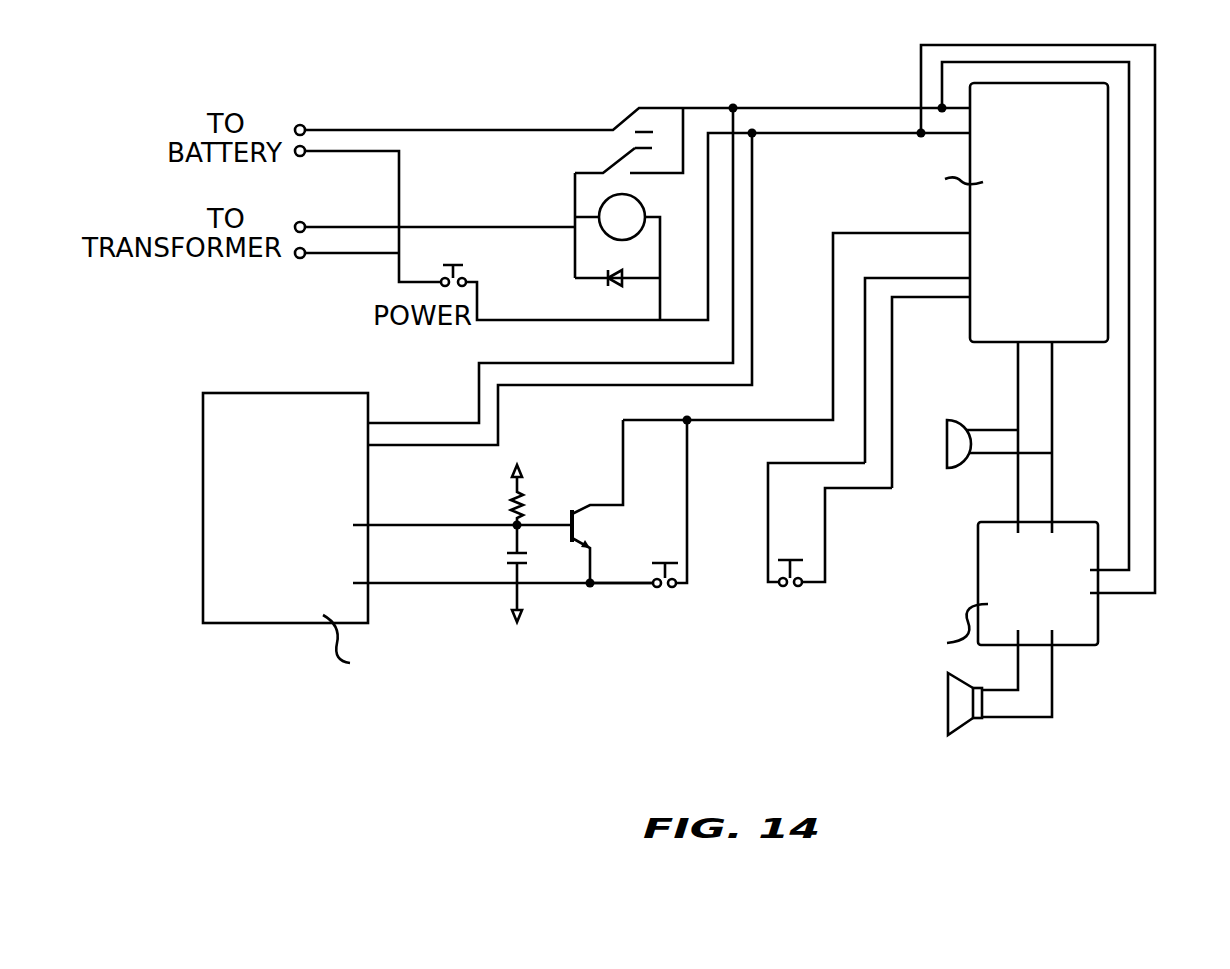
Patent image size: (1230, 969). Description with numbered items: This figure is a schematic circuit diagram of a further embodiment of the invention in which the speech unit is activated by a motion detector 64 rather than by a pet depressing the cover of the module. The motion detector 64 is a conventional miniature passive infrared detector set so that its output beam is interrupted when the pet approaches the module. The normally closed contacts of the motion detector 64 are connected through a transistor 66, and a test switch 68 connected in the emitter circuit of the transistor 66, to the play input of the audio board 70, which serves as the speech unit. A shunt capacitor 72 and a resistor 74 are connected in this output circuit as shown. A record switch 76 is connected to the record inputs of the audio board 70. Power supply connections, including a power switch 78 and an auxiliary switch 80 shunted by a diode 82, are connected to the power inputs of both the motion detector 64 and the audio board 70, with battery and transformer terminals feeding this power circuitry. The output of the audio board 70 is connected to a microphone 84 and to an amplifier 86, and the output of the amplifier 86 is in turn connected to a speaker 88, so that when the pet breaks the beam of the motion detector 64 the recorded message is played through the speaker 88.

The motion detector 64 is at (303, 398).
The transistor 66 is at (588, 508).
The test switch 68 is at (665, 561).
The audio board 70 is at (1081, 342).
The shunt capacitor 72 is at (509, 563).
The resistor 74 is at (513, 513).
The record switch 76 is at (790, 560).
The power switch 78 is at (456, 262).
The auxiliary switch 80 is at (594, 194).
The diode 82 is at (608, 281).
The microphone 84 is at (961, 422).
The amplifier 86 is at (978, 547).
The speaker 88 is at (967, 722).